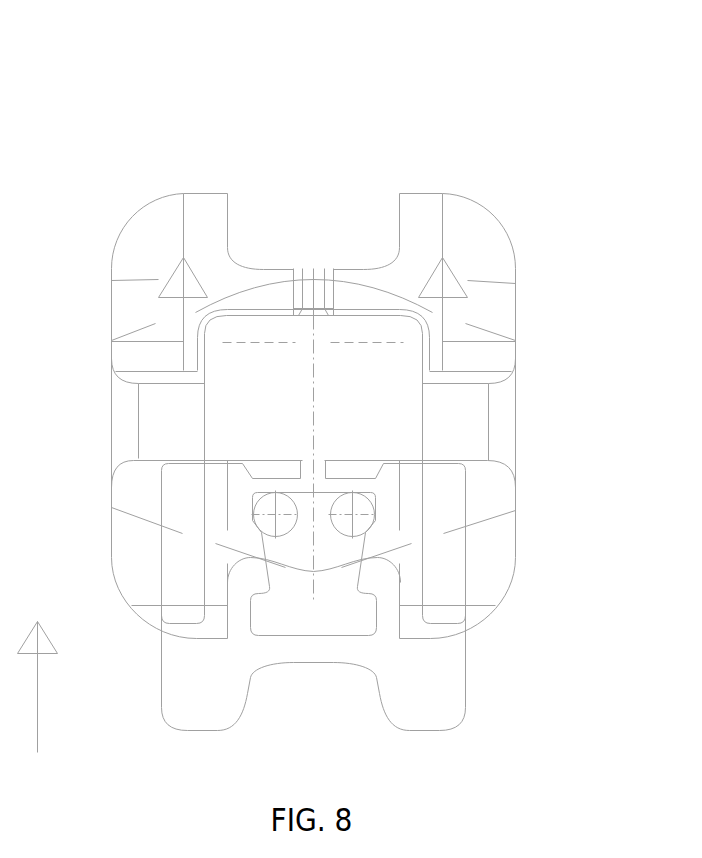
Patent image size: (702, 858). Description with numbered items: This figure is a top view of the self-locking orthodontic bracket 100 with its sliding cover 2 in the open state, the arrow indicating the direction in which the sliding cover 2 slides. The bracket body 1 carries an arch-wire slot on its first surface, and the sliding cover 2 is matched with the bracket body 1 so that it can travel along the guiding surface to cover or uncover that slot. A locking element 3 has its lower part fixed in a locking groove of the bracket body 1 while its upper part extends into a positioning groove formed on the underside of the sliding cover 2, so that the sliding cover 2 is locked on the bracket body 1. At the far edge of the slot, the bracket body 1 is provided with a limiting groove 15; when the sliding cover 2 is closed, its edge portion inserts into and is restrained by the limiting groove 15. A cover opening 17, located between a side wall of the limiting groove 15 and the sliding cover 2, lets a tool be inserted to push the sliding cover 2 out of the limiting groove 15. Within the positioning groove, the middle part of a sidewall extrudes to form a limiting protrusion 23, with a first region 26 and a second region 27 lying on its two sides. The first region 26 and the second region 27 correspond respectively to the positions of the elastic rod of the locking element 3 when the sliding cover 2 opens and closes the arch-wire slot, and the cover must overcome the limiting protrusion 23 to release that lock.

The self-locking orthodontic bracket 100 is at (324, 101).
The bracket body 1 is at (487, 246).
The sliding cover 2 is at (443, 707).
The locking element 3 is at (373, 513).
The limiting groove 15 is at (515, 342).
The cover opening 17 is at (233, 353).
The limiting protrusion 23 is at (250, 558).
The first region 26 is at (250, 517).
The second region 27 is at (250, 613).